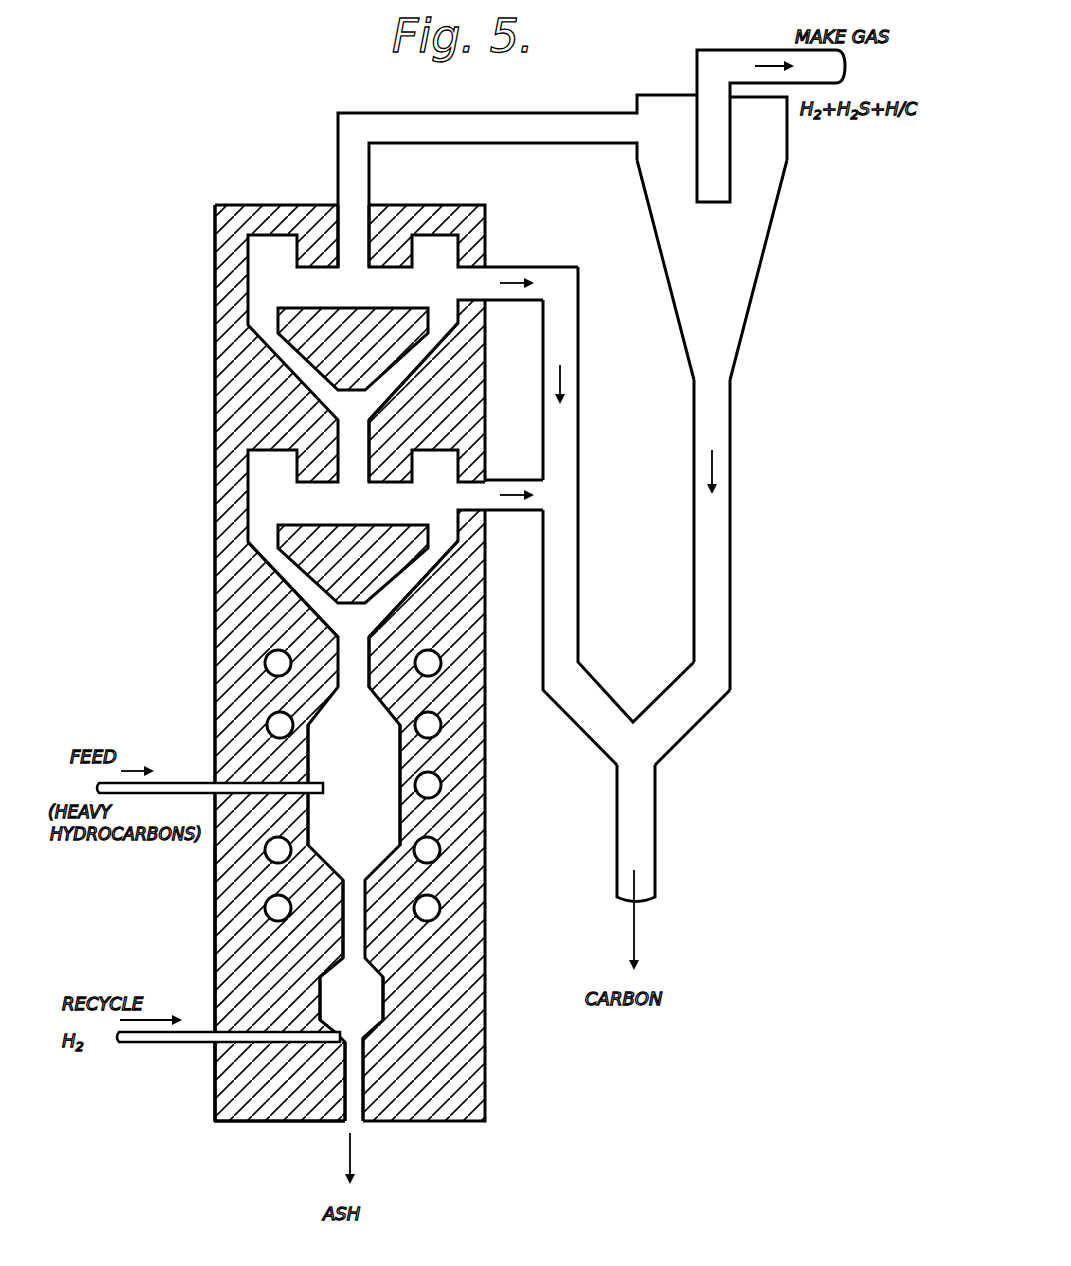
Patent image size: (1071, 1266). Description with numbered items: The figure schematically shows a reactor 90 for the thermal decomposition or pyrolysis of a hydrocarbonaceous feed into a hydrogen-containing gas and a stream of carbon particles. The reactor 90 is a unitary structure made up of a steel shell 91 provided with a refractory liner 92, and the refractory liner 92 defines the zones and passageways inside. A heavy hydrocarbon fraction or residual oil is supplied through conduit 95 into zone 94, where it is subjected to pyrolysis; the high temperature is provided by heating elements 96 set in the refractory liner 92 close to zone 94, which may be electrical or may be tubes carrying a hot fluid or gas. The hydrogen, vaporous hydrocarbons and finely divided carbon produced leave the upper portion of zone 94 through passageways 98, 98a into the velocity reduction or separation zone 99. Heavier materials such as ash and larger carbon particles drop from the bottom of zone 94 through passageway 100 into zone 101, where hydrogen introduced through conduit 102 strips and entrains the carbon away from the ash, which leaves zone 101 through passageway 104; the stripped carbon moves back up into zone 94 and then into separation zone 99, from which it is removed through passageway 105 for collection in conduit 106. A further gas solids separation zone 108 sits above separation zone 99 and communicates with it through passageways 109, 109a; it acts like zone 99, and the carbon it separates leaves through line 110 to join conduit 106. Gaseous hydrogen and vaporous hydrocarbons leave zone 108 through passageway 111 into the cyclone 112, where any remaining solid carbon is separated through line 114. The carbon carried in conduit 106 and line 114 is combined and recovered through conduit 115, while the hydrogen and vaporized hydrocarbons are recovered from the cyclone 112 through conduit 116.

The reactor 90 is at (180, 348).
The steel shell 91 is at (214, 562).
The refractory liner 92 is at (287, 972).
The zone 94 is at (368, 754).
The conduit 95 is at (198, 782).
The heating elements 96 is at (280, 725).
The passageway 98 is at (363, 652).
The passageway 98a is at (300, 583).
The separation zone 99 is at (370, 517).
The passageway 100 is at (357, 927).
The zone 101 is at (368, 1002).
The conduit 102 is at (155, 1043).
The passageway 104 is at (354, 1105).
The passageway 105 is at (513, 480).
The conduit 106 is at (578, 372).
The gas solids separation zone 108 is at (378, 298).
The passageway 109 is at (363, 432).
The passageway 109a is at (421, 363).
The line 110 is at (566, 266).
The passageway 111 is at (338, 168).
The cyclone 112 is at (649, 212).
The line 114 is at (731, 532).
The conduit 115 is at (655, 848).
The conduit 116 is at (726, 50).